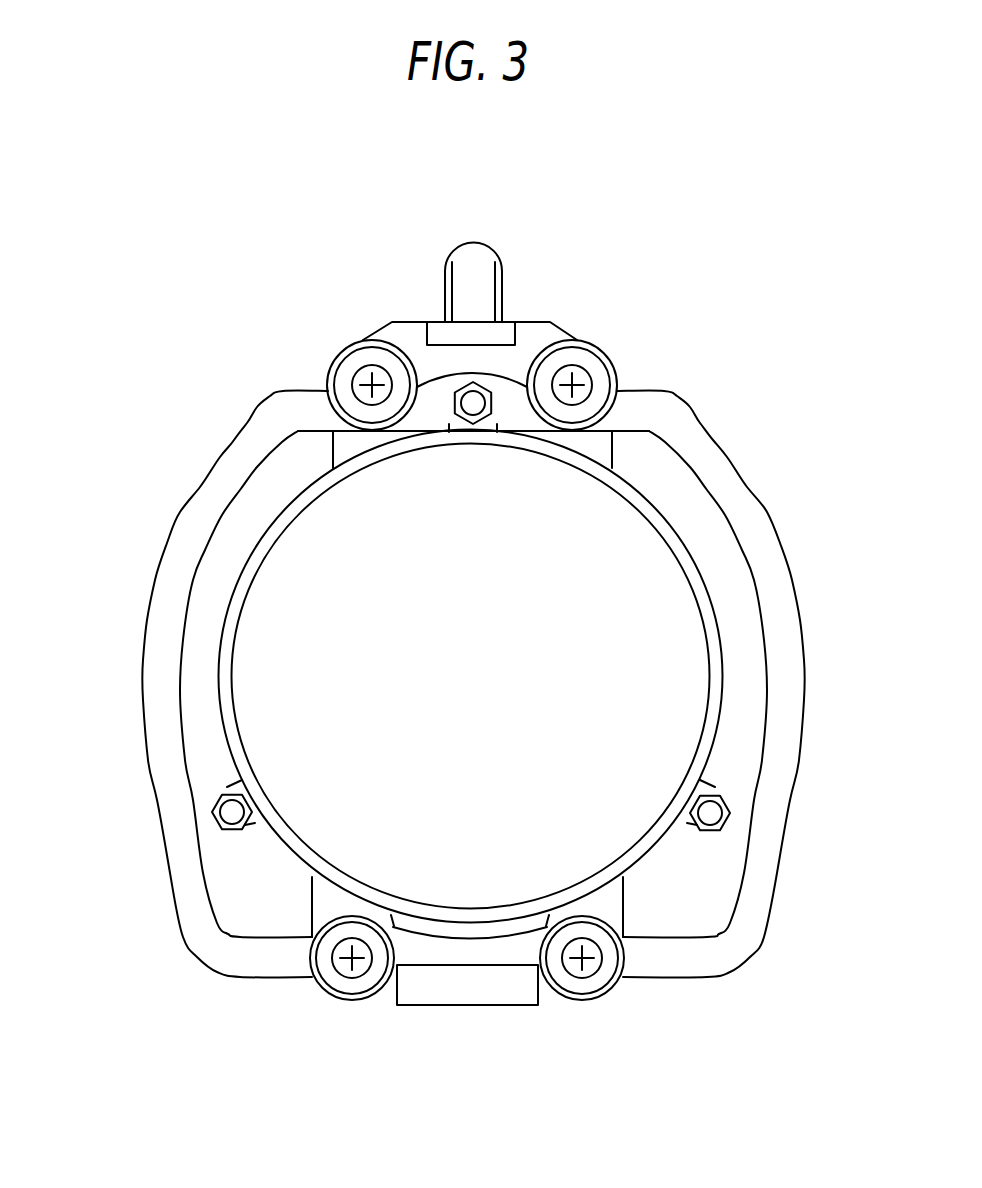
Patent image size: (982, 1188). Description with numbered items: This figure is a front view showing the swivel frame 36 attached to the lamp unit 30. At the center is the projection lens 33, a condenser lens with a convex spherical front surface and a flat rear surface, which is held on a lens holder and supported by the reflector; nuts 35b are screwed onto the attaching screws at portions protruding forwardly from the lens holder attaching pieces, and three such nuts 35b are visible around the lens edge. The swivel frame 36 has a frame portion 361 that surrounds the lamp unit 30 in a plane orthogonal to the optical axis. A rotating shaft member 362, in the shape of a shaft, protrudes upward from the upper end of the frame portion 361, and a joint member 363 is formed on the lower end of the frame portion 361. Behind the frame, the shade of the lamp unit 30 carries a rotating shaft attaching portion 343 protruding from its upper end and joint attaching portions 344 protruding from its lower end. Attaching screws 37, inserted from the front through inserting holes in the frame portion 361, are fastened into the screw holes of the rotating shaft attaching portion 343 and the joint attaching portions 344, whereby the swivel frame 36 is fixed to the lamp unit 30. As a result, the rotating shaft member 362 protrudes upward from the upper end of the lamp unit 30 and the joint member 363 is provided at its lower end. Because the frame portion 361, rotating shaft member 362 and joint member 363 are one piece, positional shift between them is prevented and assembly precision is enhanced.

The lamp unit 30 is at (700, 560).
The projection lens 33 is at (677, 657).
The nuts 35b is at (492, 410).
The swivel frame 36 is at (200, 485).
The frame portion 361 is at (143, 700).
The rotating shaft member 362 is at (473, 250).
The joint member 363 is at (488, 992).
The attaching screws 37 is at (363, 368).
The rotating shaft attaching portion 343 is at (603, 448).
The joint attaching portions 344 is at (613, 897).